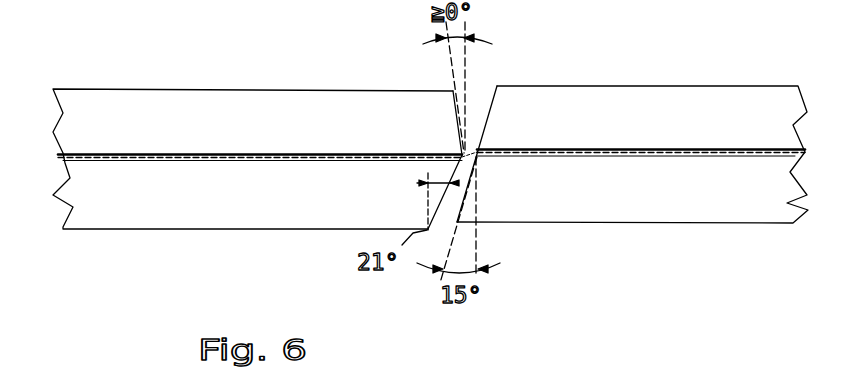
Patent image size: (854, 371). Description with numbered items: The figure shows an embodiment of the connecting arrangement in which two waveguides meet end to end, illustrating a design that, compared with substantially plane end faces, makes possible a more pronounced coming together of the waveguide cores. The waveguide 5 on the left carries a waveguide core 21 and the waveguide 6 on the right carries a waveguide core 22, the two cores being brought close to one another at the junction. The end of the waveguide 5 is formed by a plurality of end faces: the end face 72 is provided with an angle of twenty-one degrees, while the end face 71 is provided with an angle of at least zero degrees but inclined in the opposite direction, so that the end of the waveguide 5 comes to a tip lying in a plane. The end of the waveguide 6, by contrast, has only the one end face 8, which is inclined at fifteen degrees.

The waveguide 5 is at (220, 228).
The waveguide 6 is at (652, 223).
The end face 8 is at (489, 113).
The waveguide core 21 is at (177, 160).
The waveguide core 22 is at (607, 155).
The end face 71 is at (458, 128).
The end face 72 is at (437, 203).